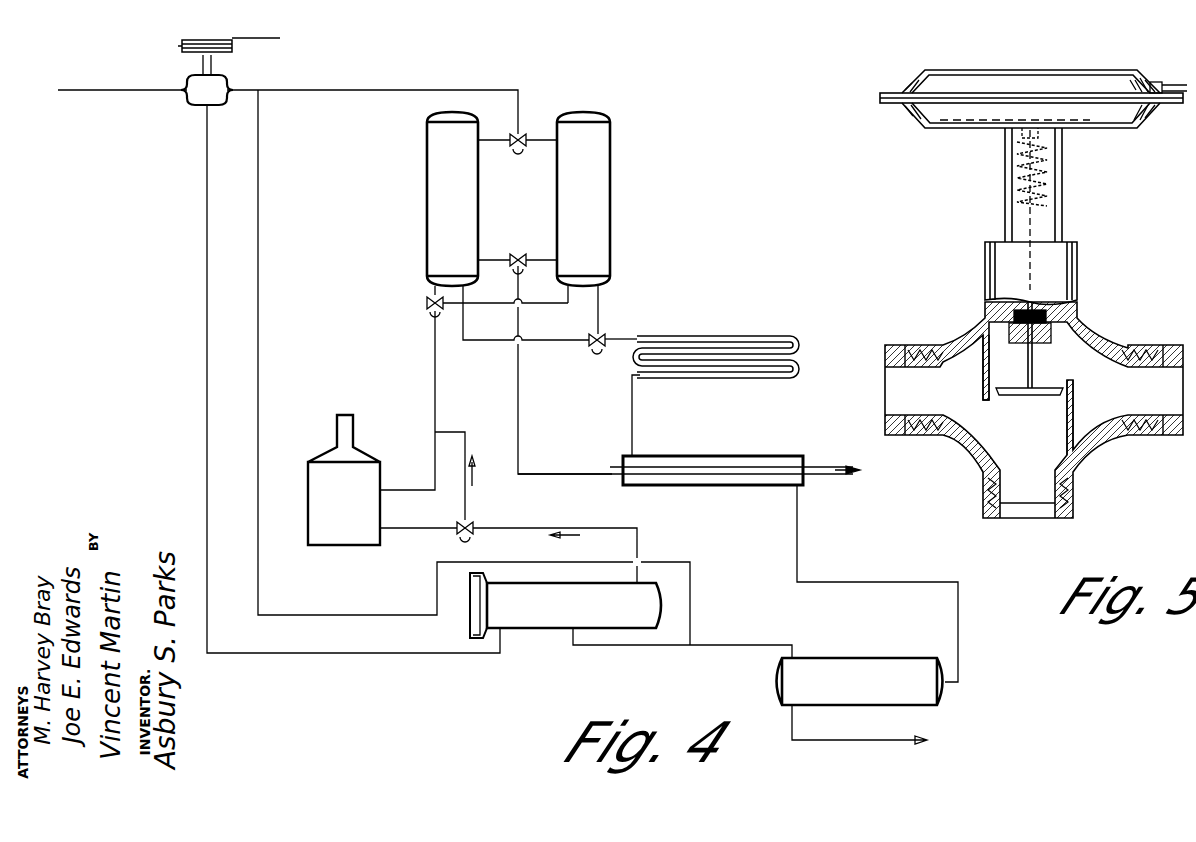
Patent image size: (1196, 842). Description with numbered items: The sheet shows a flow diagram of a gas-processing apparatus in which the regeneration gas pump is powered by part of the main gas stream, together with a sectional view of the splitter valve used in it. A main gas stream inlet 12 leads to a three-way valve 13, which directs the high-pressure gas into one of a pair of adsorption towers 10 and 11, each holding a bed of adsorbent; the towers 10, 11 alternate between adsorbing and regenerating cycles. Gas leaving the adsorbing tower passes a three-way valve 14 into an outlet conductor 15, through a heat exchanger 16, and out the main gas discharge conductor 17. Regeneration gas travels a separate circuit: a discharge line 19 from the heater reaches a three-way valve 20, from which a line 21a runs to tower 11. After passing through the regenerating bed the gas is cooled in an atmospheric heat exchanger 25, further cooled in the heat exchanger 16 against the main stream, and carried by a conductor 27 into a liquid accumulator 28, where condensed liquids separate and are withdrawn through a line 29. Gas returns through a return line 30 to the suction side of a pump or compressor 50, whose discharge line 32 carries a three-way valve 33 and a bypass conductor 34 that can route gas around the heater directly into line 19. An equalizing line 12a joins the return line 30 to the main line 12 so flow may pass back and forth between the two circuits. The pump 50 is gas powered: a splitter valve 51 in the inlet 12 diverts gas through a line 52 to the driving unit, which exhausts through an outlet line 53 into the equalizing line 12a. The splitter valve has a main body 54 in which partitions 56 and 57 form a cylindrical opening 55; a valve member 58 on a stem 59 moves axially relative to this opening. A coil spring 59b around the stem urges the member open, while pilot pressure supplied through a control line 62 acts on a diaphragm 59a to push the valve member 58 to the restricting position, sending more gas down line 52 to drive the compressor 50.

In FIG. 4, the adsorption tower 10 is at (437, 172).
In FIG. 4, the adsorption tower 11 is at (598, 178).
In FIG. 4, the main gas stream inlet 12 is at (84, 90).
In FIG. 5, the main gas stream inlet 12 is at (1162, 345).
In FIG. 4, the equalizing or breather line 12a is at (258, 152).
In FIG. 4, the three-way valve 13 is at (520, 136).
In FIG. 4, the three-way valve 14 is at (519, 252).
In FIG. 4, the outlet conductor 15 is at (518, 377).
In FIG. 4, the heat exchanger 16 is at (740, 456).
In FIG. 4, the main gas discharge conductor 17 is at (824, 468).
In FIG. 4, the discharge line 19 is at (435, 368).
In FIG. 4, the three-way valve 20 is at (427, 303).
In FIG. 4, the line 21a is at (495, 303).
In FIG. 4, the heat exchanger 25 is at (740, 338).
In FIG. 4, the conductor 27 is at (798, 525).
In FIG. 4, the liquid accumulator 28 is at (856, 657).
In FIG. 4, the line 29 is at (856, 740).
In FIG. 4, the return line 30 is at (716, 643).
In FIG. 4, the discharge line 32 is at (518, 528).
In FIG. 4, the three-way valve 33 is at (470, 522).
In FIG. 4, the bypass conductor 34 is at (480, 423).
In FIG. 4, the pump or compressor 50 is at (532, 630).
In FIG. 4, the splitter valve 51 is at (205, 93).
In FIG. 4, the line 52 is at (207, 240).
In FIG. 5, the line 52 is at (1073, 507).
In FIG. 4, the outlet line 53 is at (500, 568).
In FIG. 5, the main body 54 is at (962, 333).
In FIG. 5, the cylindrical opening 55 is at (1066, 404).
In FIG. 5, the partition 56 is at (983, 392).
In FIG. 5, the partition 57 is at (1080, 412).
In FIG. 5, the valve member 58 is at (1018, 397).
In FIG. 5, the stem 59 is at (1047, 340).
In FIG. 5, the diaphragm 59a is at (1082, 126).
In FIG. 5, the coil spring 59b is at (1052, 185).
In FIG. 4, the control line 62 is at (262, 38).
In FIG. 5, the control line 62 is at (1166, 84).